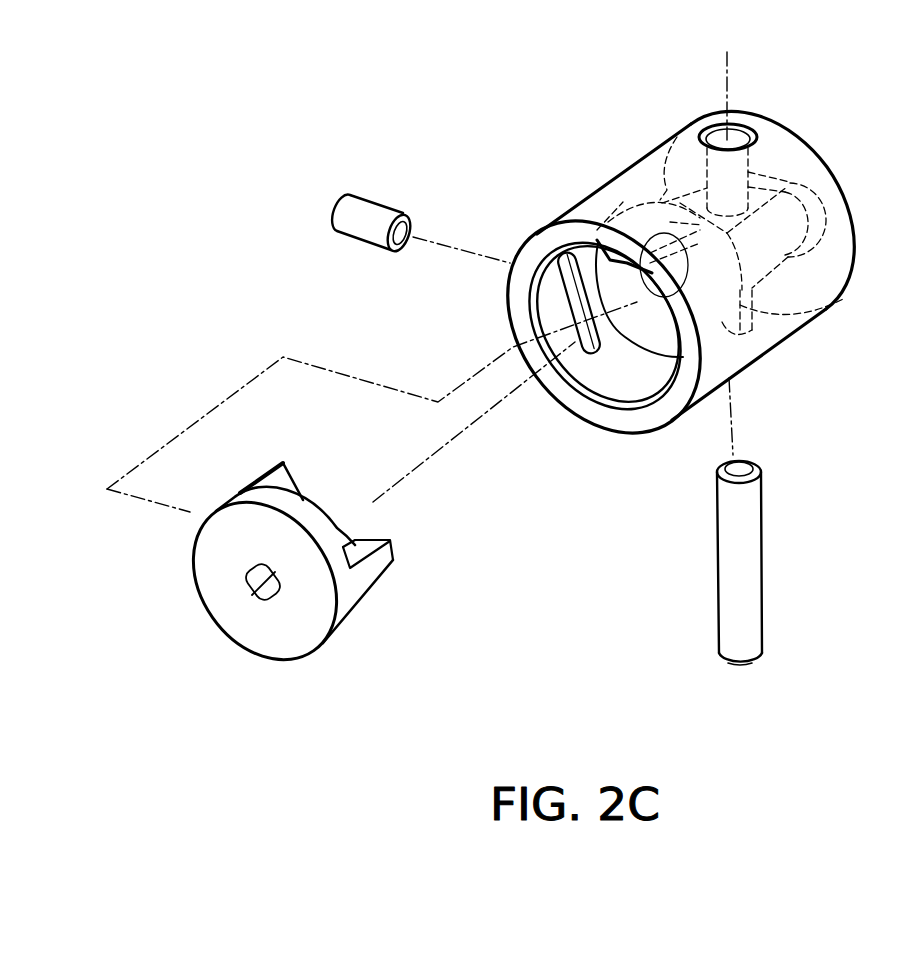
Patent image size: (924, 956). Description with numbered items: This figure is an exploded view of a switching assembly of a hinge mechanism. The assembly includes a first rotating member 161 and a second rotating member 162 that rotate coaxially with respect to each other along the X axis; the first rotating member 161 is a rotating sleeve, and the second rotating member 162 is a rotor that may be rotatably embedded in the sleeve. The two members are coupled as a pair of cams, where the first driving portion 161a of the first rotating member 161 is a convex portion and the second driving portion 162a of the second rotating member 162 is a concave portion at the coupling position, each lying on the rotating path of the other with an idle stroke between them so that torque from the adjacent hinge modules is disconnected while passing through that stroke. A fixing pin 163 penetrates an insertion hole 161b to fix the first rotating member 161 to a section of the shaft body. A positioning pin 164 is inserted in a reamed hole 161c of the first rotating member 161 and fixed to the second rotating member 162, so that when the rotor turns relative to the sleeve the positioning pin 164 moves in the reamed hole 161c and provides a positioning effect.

The first rotating member 161 is at (825, 262).
The first driving portion 161a is at (650, 272).
The insertion hole 161b is at (739, 136).
The reamed hole 161c is at (548, 297).
The second rotating member 162 is at (255, 622).
The second driving portion 162a is at (356, 549).
The fixing pin 163 is at (740, 542).
The positioning pin 164 is at (348, 205).